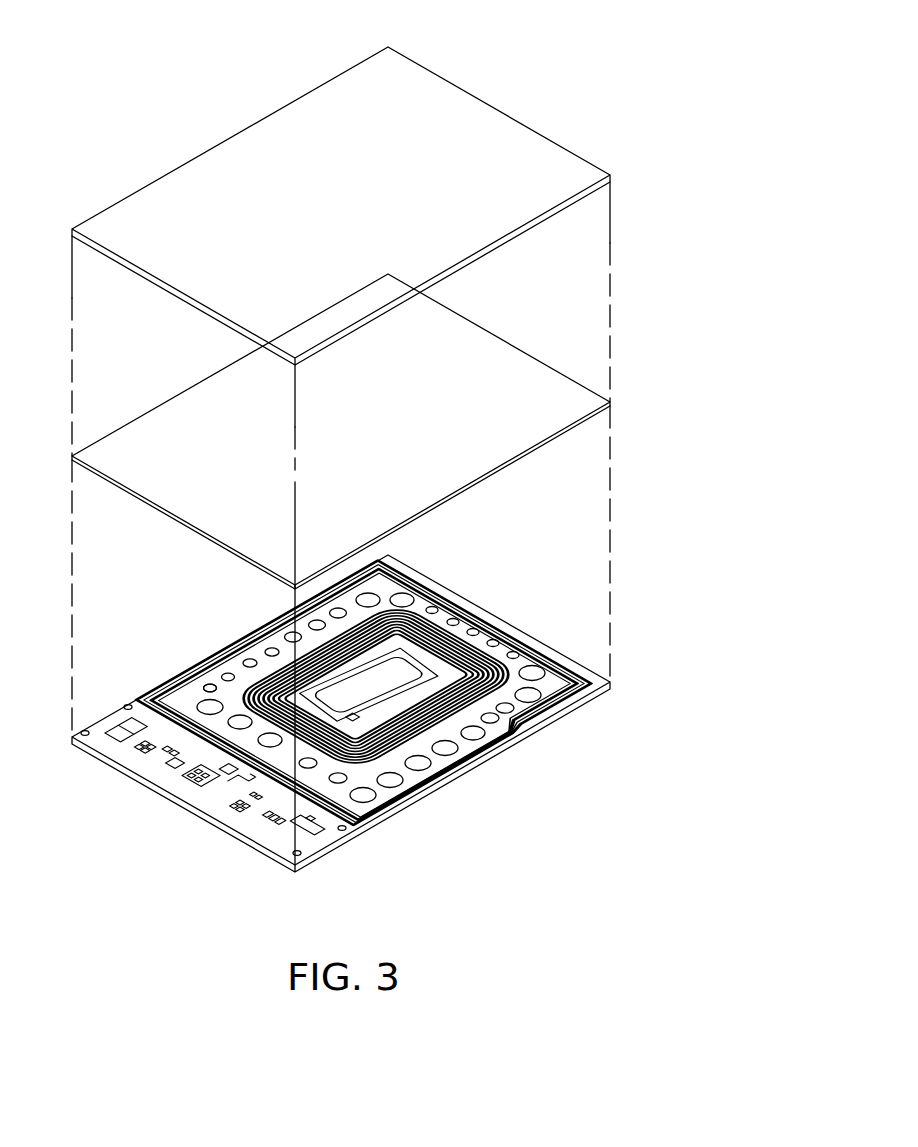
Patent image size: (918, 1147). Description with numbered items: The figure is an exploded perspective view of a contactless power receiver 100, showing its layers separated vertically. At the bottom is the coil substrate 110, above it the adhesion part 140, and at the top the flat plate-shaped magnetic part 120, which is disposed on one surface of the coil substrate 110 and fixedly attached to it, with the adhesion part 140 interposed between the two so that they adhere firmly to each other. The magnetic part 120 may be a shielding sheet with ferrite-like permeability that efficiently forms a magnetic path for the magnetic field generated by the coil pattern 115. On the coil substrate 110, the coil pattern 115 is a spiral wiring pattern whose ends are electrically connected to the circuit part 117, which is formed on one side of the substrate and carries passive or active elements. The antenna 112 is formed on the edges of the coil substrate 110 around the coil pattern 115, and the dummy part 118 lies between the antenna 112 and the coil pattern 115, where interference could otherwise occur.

The contactless power receiver 100 is at (722, 88).
The coil substrate 110 is at (572, 628).
The antenna 112 is at (590, 679).
The coil pattern 115 is at (412, 745).
The circuit part 117 is at (317, 838).
The dummy part 118 is at (203, 697).
The magnetic part 120 is at (573, 118).
The adhesion part 140 is at (573, 343).